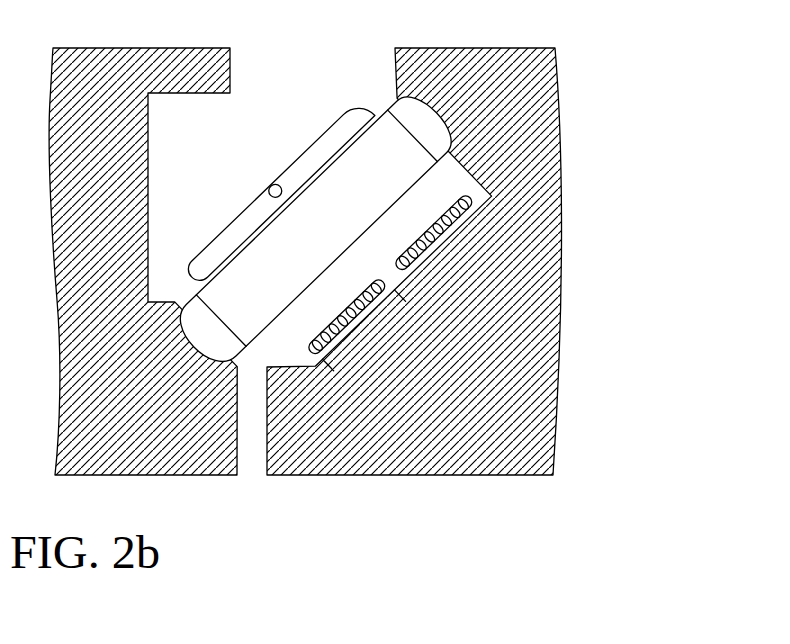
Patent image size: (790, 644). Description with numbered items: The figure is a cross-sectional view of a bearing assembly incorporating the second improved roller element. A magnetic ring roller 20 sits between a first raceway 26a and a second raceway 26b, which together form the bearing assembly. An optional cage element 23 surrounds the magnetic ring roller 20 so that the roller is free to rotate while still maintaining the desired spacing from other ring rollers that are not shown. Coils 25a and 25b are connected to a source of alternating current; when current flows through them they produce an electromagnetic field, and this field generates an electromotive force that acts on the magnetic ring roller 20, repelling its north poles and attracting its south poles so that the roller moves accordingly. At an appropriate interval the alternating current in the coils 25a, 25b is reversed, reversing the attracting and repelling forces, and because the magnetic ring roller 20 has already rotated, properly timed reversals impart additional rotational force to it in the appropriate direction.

The magnetic ring roller 20 is at (388, 117).
The cage element 23 is at (233, 237).
The coil 25a is at (350, 329).
The coil 25b is at (444, 220).
The first raceway 26a is at (520, 462).
The second raceway 26b is at (172, 464).